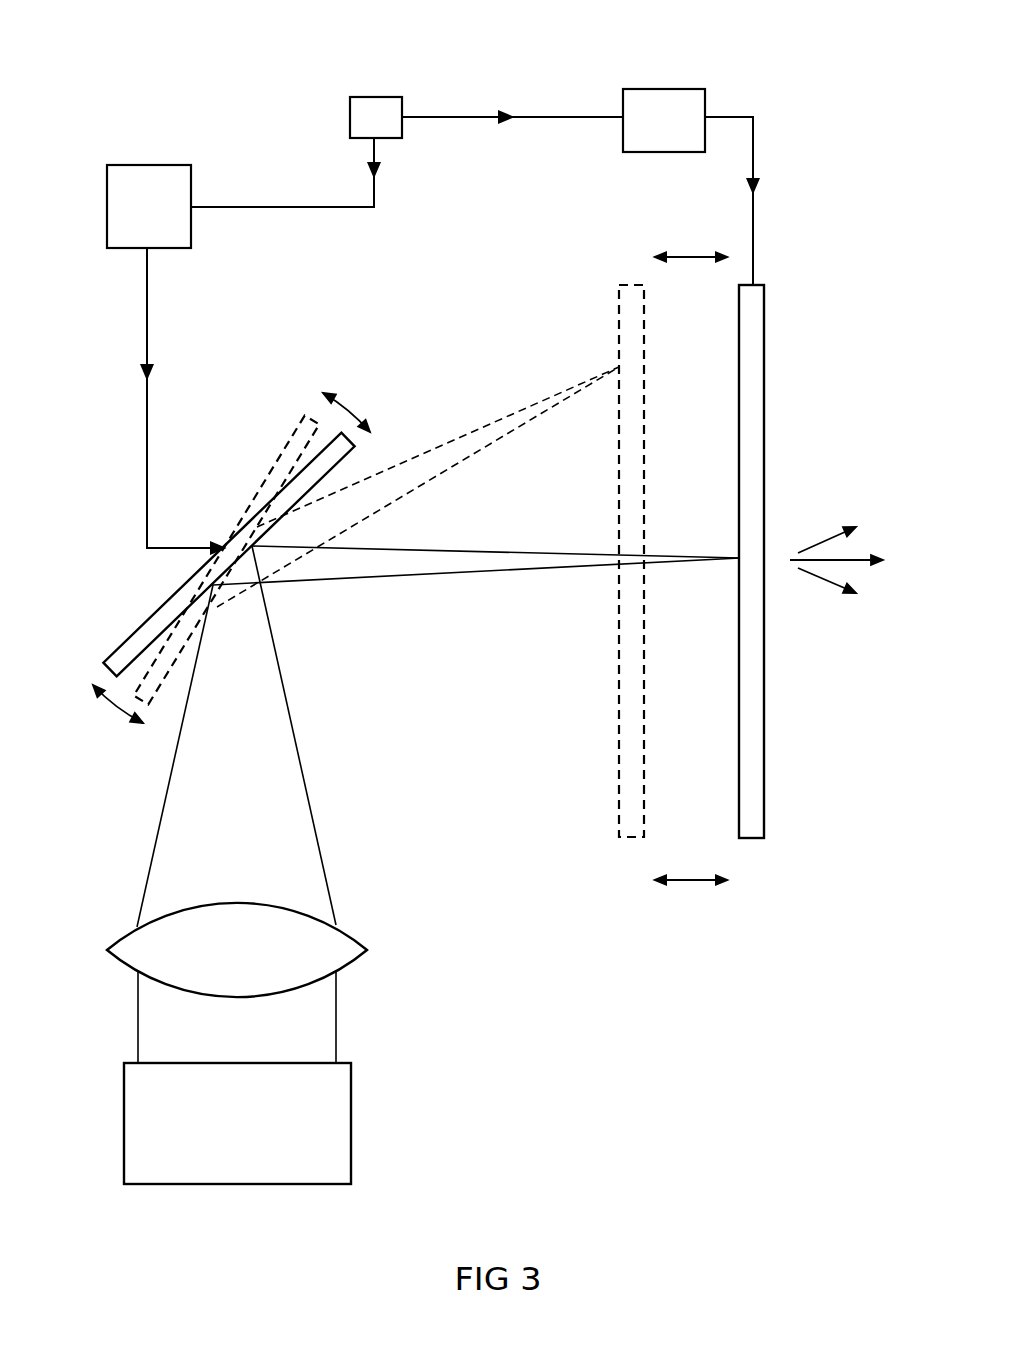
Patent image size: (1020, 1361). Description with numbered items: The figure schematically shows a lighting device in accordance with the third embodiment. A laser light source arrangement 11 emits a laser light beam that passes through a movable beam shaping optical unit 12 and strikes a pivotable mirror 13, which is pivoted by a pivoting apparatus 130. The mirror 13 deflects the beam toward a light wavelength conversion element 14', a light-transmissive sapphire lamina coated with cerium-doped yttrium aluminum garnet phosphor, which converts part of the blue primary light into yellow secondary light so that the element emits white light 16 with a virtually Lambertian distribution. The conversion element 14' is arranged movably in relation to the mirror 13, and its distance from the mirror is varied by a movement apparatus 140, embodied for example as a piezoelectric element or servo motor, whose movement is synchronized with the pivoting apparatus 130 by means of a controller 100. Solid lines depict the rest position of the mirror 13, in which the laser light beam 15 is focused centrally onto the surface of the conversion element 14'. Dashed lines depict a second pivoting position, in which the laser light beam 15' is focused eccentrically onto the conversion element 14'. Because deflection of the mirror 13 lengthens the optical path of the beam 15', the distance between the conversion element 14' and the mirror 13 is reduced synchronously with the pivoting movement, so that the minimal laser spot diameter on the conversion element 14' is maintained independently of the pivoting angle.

The controller 100 is at (374, 110).
The pivoting apparatus 130 is at (149, 183).
The movement apparatus 140 is at (666, 107).
The pivotable mirror 13 is at (139, 643).
The laser light beam 15 is at (438, 736).
The laser light beam 15' is at (418, 454).
The light wavelength conversion element 14' is at (754, 635).
The white light 16 is at (836, 584).
The movable beam shaping optical unit 12 is at (327, 950).
The laser light source arrangement 11 is at (323, 1122).